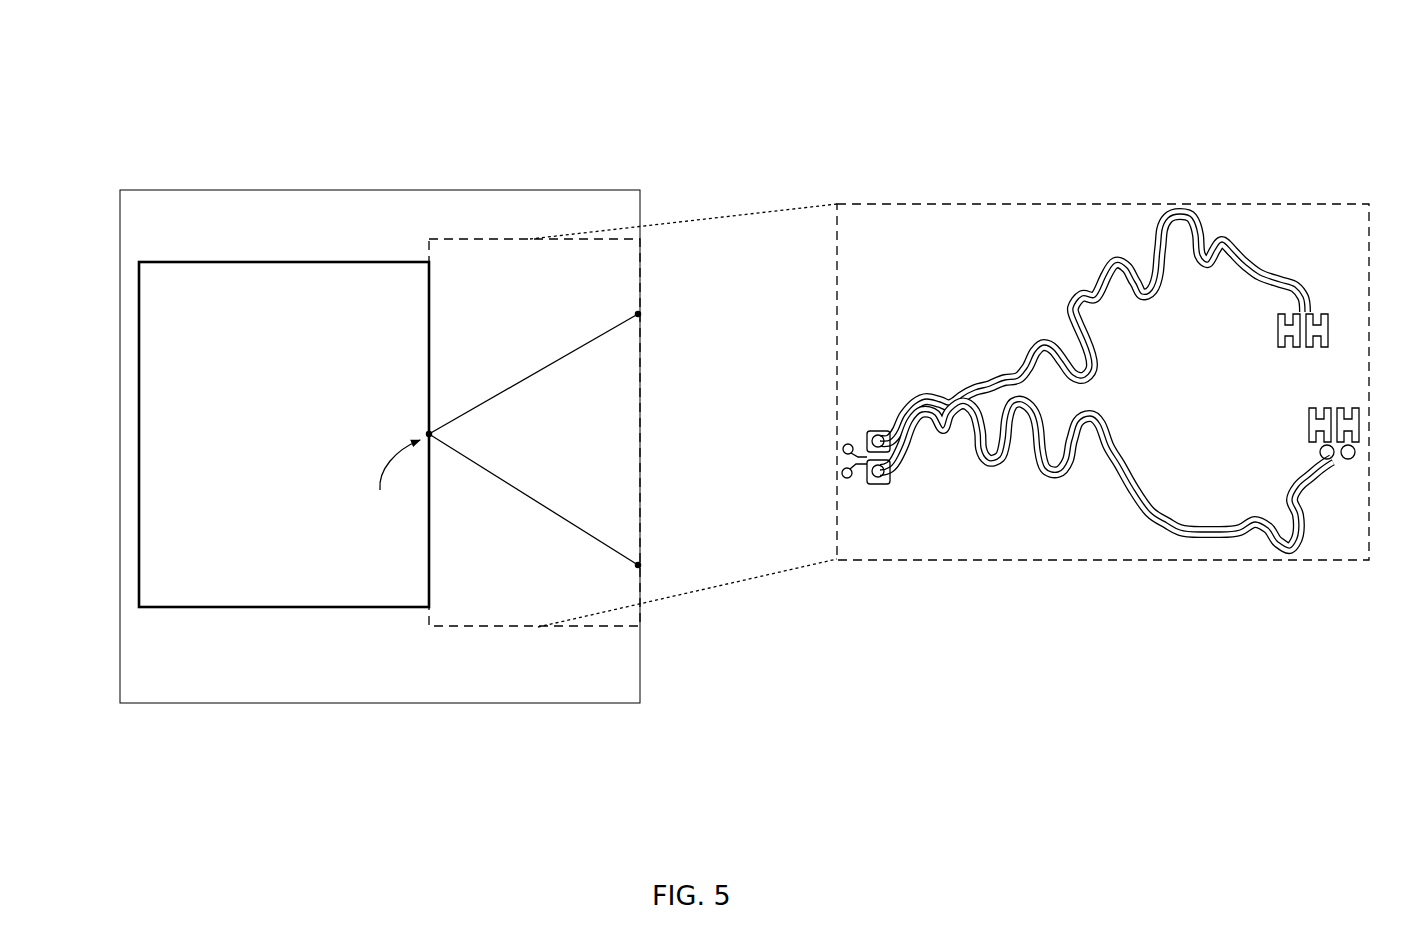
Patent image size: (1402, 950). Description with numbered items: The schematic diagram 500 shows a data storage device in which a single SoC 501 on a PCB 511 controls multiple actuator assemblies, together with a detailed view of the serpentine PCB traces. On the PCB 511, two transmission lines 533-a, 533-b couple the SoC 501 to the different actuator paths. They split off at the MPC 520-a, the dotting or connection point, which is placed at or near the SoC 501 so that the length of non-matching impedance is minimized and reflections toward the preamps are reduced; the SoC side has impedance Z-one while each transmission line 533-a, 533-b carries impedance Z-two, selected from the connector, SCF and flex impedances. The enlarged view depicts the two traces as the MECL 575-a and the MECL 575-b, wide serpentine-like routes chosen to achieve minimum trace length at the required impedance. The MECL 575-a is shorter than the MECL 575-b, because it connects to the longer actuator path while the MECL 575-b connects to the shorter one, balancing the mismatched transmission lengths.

The schematic diagram 500 is at (97, 95).
The PCB 511 is at (380, 446).
The SoC 501 is at (284, 434).
The MPC 520-a is at (440, 437).
The transmission line 533-a is at (594, 340).
The transmission line 533-b is at (495, 478).
The MECL 575-a is at (1068, 290).
The MECL 575-b is at (1056, 480).